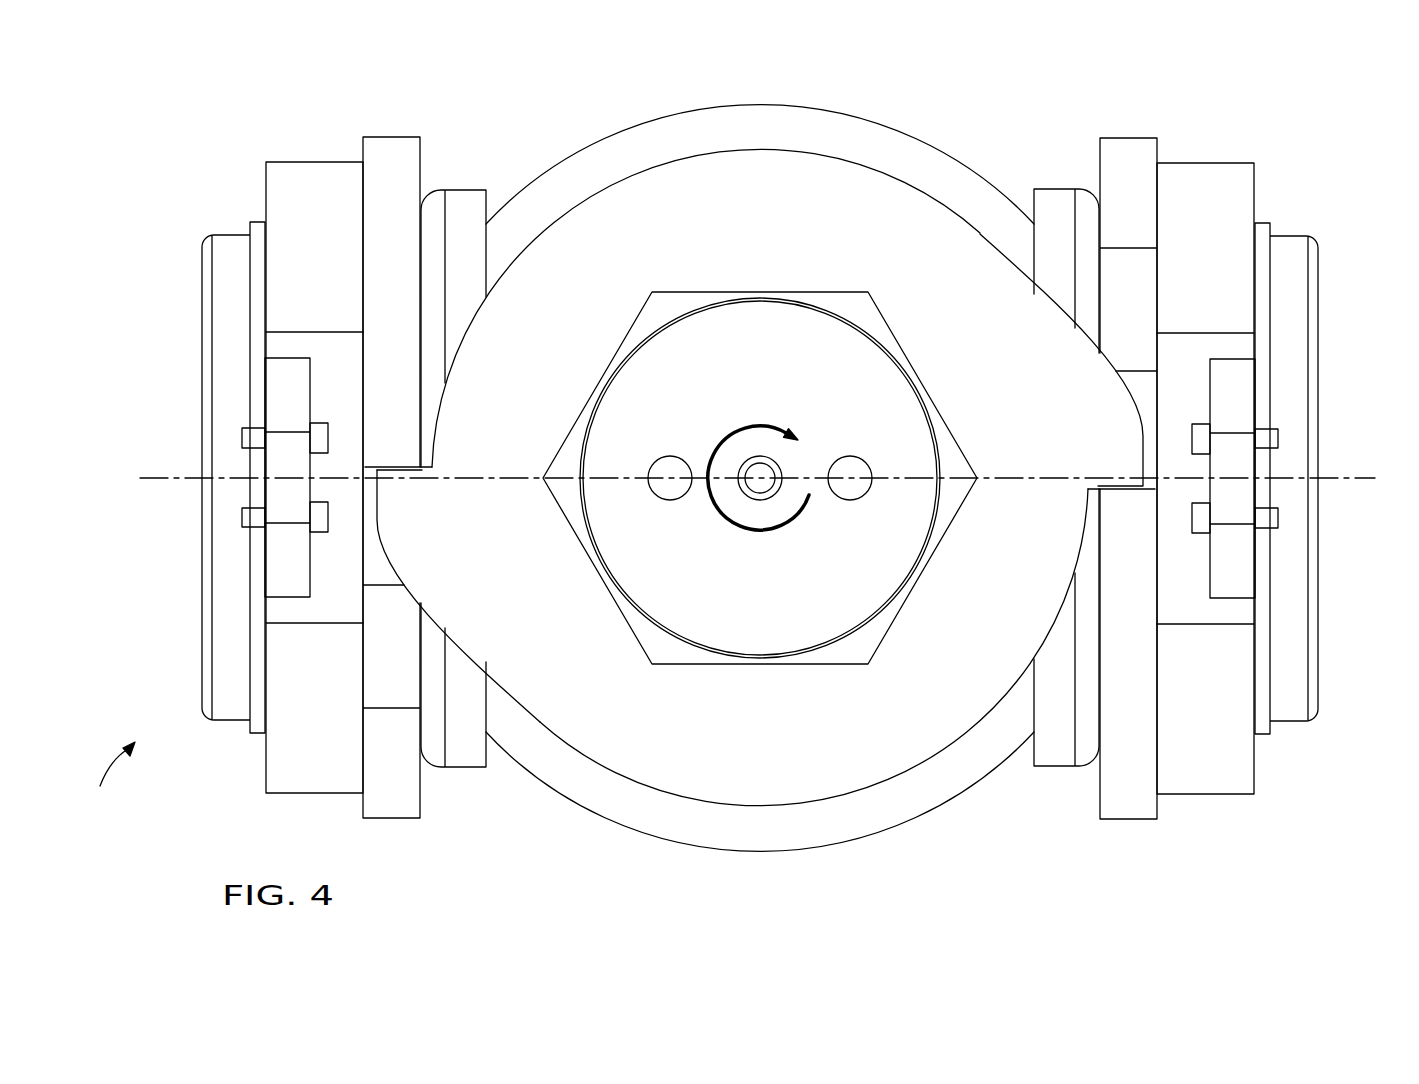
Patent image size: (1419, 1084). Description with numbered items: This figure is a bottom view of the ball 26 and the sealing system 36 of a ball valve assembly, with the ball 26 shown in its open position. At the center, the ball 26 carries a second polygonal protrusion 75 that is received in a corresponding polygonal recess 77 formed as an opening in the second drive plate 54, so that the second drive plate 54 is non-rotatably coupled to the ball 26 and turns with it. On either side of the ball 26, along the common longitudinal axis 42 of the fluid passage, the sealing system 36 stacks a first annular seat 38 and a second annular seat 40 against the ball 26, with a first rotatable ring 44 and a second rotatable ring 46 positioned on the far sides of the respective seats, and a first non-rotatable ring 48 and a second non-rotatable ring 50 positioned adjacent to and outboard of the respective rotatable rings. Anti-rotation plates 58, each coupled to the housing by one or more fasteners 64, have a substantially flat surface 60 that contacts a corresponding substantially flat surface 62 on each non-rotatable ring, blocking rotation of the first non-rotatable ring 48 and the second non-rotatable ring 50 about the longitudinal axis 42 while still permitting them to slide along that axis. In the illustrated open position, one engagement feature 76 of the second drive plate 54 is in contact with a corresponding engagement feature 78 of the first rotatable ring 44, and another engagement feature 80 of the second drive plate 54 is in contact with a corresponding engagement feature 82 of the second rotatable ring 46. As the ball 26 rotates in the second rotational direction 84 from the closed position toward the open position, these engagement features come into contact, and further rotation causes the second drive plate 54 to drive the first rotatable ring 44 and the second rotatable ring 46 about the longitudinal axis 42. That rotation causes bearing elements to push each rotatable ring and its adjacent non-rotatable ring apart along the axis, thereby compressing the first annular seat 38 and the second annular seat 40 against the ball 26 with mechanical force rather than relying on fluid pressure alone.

The ball 26 is at (876, 138).
The sealing system 36 is at (110, 780).
The first annular seat 38 is at (1060, 768).
The second annular seat 40 is at (468, 202).
The longitudinal axis 42 is at (1343, 477).
The first rotatable ring 44 is at (1130, 820).
The second rotatable ring 46 is at (375, 800).
The first non-rotatable ring 48 is at (1205, 793).
The second non-rotatable ring 50 is at (267, 765).
The second drive plate 54 is at (485, 637).
The anti-rotation plate 58 is at (273, 468).
The substantially flat surface 60 is at (287, 597).
The substantially flat surface 62 is at (285, 345).
The fastener 64 is at (250, 442).
The second polygonal protrusion 75 is at (852, 305).
The engagement feature 76 is at (1113, 493).
The polygonal recess 77 is at (898, 343).
The engagement feature 78 is at (1134, 481).
The engagement feature 80 is at (408, 466).
The engagement feature 82 is at (386, 466).
The second rotational direction 84 is at (713, 493).